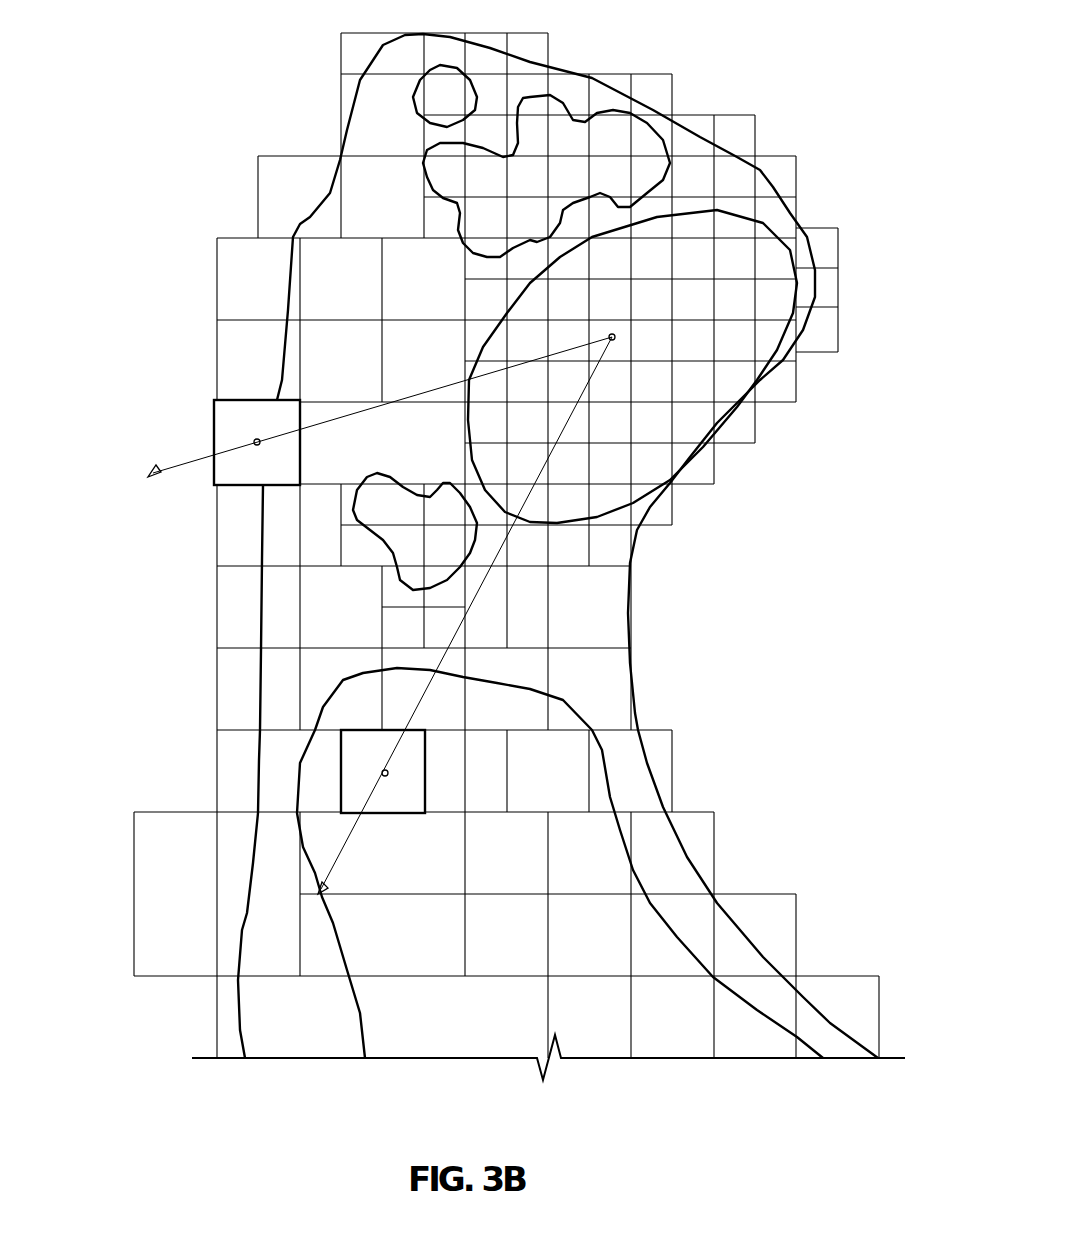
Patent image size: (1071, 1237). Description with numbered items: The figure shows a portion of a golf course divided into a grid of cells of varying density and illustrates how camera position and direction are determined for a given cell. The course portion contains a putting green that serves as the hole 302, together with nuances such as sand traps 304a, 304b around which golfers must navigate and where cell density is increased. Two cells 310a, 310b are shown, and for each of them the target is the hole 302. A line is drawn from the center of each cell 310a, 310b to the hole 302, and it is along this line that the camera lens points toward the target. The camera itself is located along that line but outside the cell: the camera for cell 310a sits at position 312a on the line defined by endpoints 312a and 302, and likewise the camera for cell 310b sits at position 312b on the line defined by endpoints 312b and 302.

The putting green / hole 302 is at (674, 366).
The sand trap 304a is at (571, 135).
The sand trap 304b is at (546, 567).
The cell 310a is at (200, 442).
The cell 310b is at (273, 746).
The camera position 312a is at (324, 407).
The camera position 312b is at (380, 615).